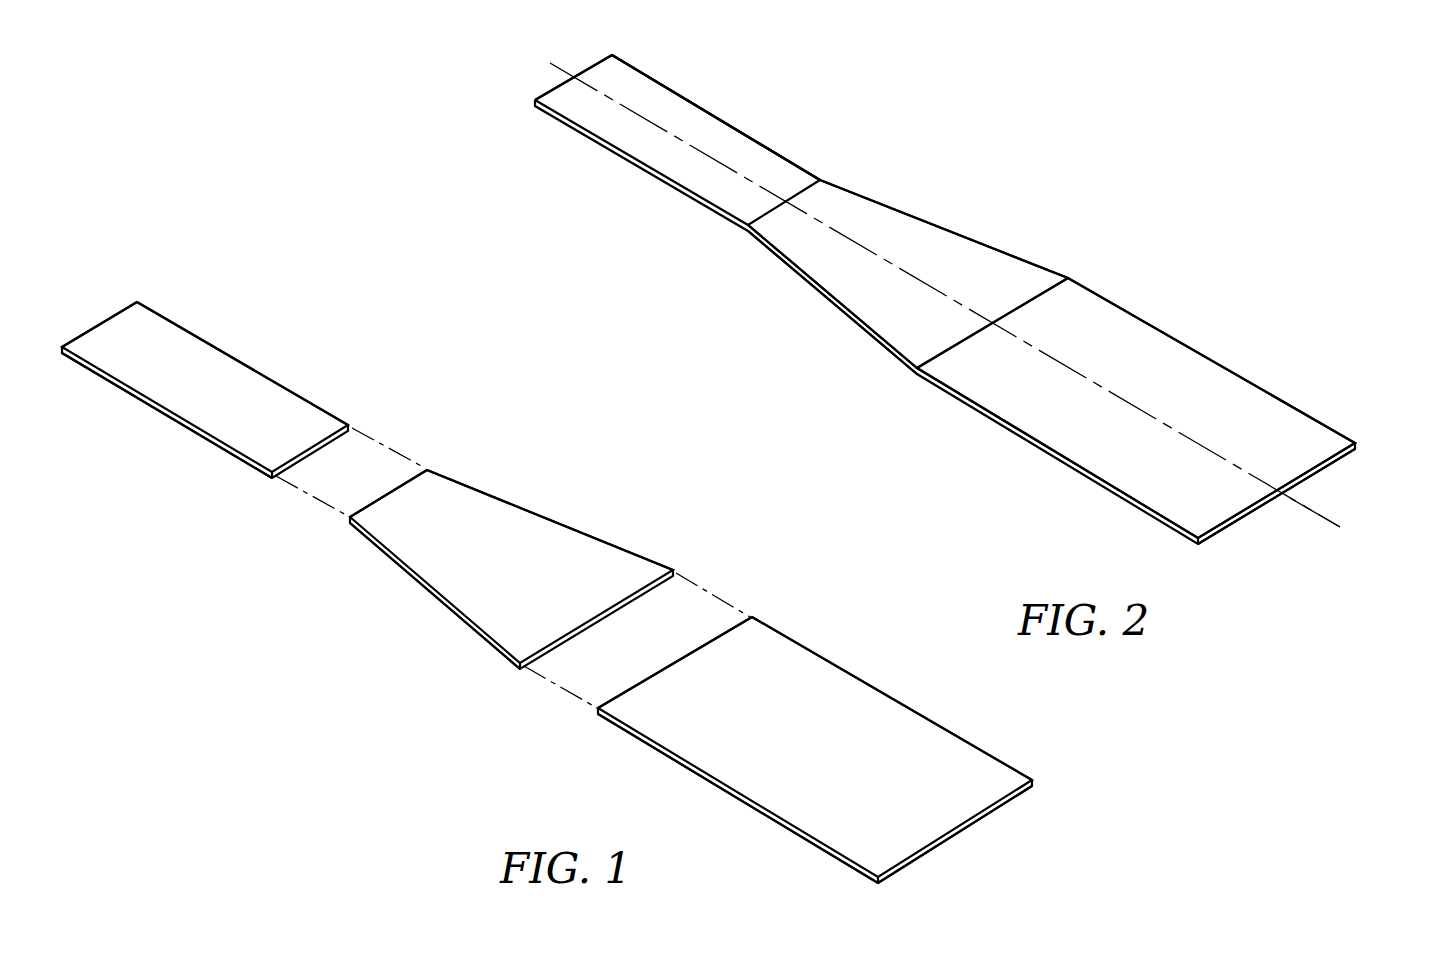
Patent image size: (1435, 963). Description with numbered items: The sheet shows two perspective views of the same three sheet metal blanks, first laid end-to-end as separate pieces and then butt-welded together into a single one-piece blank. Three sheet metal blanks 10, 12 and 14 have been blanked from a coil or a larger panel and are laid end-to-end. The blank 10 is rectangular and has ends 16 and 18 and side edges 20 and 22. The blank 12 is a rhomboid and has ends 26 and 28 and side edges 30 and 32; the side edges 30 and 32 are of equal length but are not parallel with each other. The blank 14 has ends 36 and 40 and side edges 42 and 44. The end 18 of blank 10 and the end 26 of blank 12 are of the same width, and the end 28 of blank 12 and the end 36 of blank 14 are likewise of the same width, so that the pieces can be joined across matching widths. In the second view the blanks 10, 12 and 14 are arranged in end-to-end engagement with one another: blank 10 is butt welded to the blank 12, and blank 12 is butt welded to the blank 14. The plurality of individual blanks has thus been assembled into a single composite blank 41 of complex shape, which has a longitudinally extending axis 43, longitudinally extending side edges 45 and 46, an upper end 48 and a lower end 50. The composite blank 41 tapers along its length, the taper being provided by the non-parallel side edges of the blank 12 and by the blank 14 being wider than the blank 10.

In FIG. 1, the sheet metal blank 10 is at (183, 360).
In FIG. 2, the sheet metal blank 10 is at (660, 110).
In FIG. 1, the sheet metal blank 12 is at (502, 548).
In FIG. 2, the sheet metal blank 12 is at (870, 213).
In FIG. 1, the sheet metal blank 14 is at (817, 700).
In FIG. 2, the sheet metal blank 14 is at (1132, 382).
In FIG. 1, the end 16 is at (97, 322).
In FIG. 1, the end 18 is at (355, 428).
In FIG. 1, the side edge 20 is at (168, 415).
In FIG. 1, the side edge 22 is at (162, 312).
In FIG. 1, the end 26 is at (395, 482).
In FIG. 1, the end 28 is at (680, 580).
In FIG. 1, the side edge 30 is at (430, 596).
In FIG. 1, the side edge 32 is at (467, 483).
In FIG. 1, the end 36 is at (725, 625).
In FIG. 1, the end 40 is at (967, 831).
In FIG. 2, the composite blank 41 is at (997, 198).
In FIG. 1, the side edge 42 is at (728, 792).
In FIG. 2, the longitudinal extending axis 43 is at (1315, 515).
In FIG. 1, the side edge 44 is at (925, 712).
In FIG. 2, the longitudinal extending side edge 45 is at (815, 290).
In FIG. 2, the longitudinal extending side edge 46 is at (740, 128).
In FIG. 2, the upper end 48 is at (575, 75).
In FIG. 2, the lower end 50 is at (1335, 468).